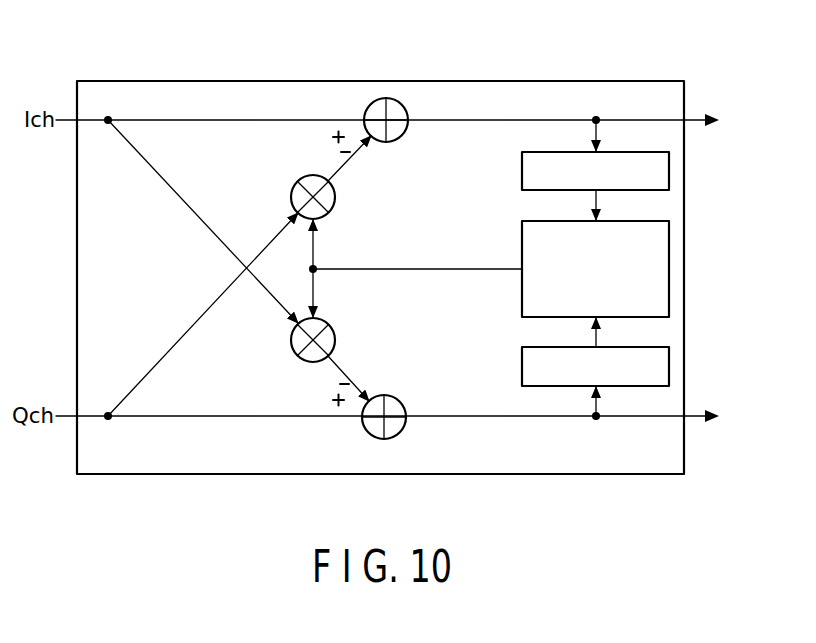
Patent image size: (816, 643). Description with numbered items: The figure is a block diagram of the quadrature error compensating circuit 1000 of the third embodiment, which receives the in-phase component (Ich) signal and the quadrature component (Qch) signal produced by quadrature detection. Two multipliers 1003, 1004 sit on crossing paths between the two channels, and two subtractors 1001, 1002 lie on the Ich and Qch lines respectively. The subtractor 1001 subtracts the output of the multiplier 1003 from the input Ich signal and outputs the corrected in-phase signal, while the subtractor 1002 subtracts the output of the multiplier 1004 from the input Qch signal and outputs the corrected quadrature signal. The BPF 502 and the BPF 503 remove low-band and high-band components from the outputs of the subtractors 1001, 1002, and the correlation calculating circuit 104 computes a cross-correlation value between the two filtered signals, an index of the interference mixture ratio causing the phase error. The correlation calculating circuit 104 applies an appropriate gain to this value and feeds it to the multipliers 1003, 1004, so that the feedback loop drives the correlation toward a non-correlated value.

The quadrature error compensating circuit 1000 is at (597, 80).
The subtractor 1001 is at (402, 136).
The subtractor 1002 is at (403, 403).
The multiplier 1003 is at (333, 207).
The multiplier 1004 is at (334, 334).
The BPF 502 is at (669, 170).
The BPF 503 is at (669, 366).
The correlation calculating circuit 104 is at (669, 270).